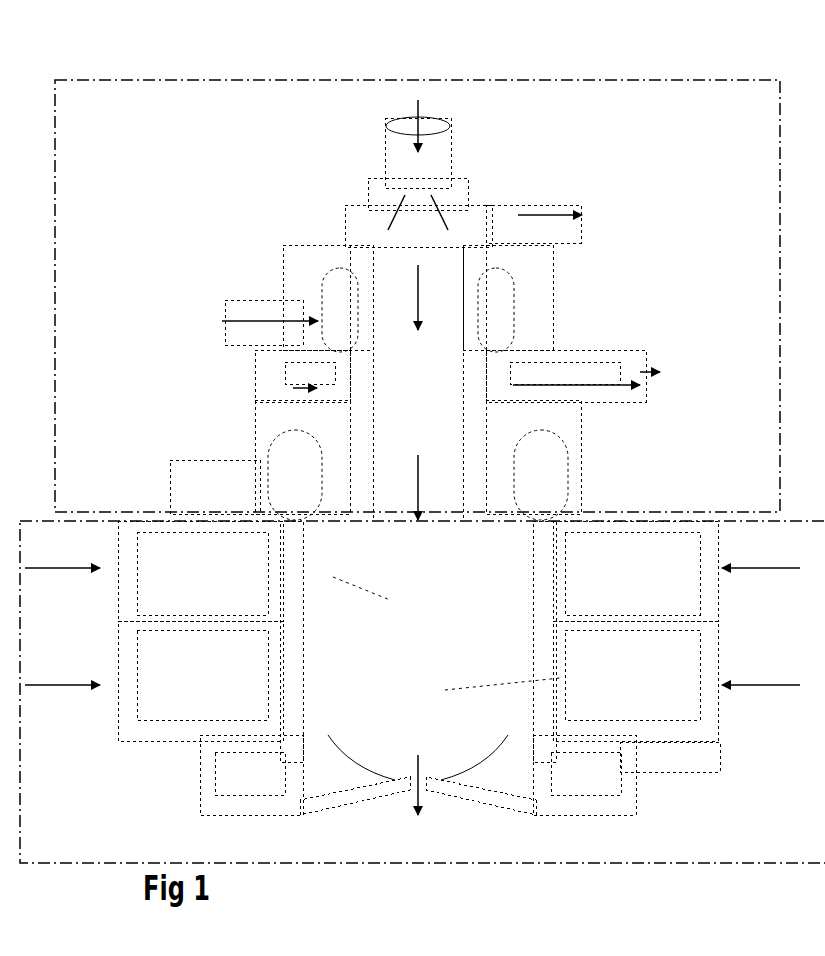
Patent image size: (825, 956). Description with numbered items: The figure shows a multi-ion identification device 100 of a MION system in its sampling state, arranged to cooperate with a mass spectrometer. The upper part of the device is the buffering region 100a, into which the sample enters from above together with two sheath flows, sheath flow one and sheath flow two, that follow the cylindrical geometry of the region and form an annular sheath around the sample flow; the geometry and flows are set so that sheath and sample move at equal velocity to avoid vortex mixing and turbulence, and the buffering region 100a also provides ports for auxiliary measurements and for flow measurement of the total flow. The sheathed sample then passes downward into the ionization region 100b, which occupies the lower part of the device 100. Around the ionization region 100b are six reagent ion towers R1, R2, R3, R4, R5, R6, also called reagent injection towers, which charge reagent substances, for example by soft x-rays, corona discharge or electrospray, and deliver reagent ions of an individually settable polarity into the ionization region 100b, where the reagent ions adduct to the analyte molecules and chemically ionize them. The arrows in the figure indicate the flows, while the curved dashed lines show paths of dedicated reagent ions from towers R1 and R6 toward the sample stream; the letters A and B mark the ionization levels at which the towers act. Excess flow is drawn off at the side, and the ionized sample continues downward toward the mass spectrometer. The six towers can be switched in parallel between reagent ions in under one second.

The multi-ion identification device 100 is at (134, 60).
The buffering region 100a is at (417, 296).
The ionization region 100b is at (422, 692).
The reagent ion tower R1 is at (200, 571).
The reagent ion tower R2 is at (418, 571).
The reagent ion tower R3 is at (635, 571).
The reagent ion tower R4 is at (200, 681).
The reagent ion tower R5 is at (418, 690).
The reagent ion tower R6 is at (635, 681).